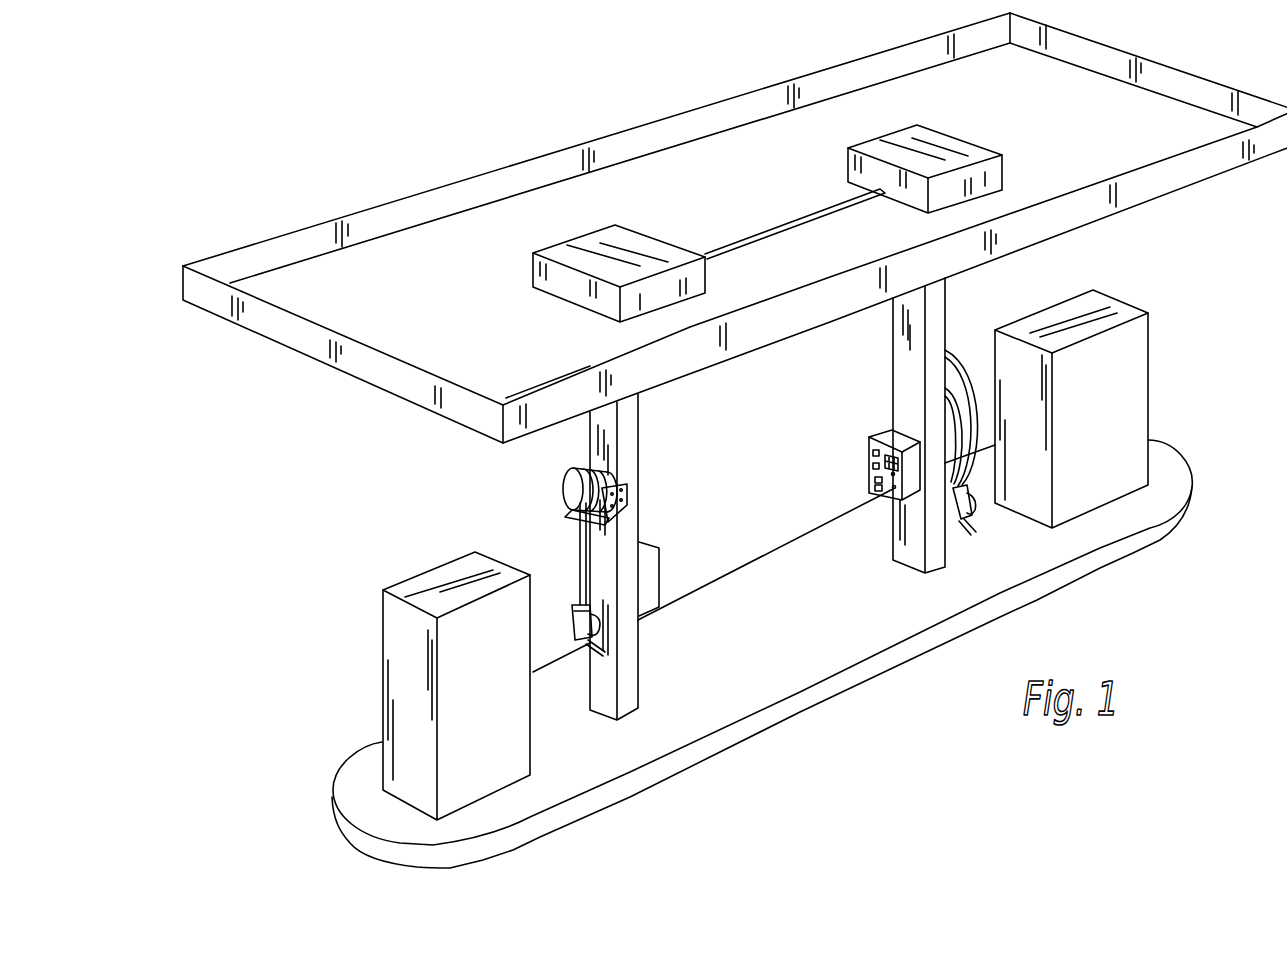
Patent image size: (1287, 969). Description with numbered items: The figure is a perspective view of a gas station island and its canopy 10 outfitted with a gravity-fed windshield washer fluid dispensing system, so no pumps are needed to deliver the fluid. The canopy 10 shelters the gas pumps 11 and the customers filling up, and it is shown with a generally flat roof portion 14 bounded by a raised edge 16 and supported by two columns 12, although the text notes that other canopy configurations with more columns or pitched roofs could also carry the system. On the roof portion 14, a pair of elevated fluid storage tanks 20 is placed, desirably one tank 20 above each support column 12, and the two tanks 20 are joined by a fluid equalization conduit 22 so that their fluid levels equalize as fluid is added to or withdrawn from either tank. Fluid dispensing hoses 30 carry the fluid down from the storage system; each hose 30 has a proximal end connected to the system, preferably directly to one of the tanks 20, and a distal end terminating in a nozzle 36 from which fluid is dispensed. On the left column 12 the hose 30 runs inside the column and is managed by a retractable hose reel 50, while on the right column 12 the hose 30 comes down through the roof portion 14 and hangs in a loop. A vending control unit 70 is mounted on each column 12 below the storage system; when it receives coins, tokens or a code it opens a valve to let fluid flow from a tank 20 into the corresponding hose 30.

The canopy 10 is at (385, 441).
The gas pumps 11 is at (383, 645).
The support columns 12 is at (636, 432).
The roof portion 14 is at (1142, 140).
The canopy 16 is at (1155, 186).
The fluid storage tanks 20 is at (533, 262).
The fluid equalization conduit 22 is at (792, 225).
The fluid dispensing hoses 30 is at (578, 553).
The nozzle 36 is at (572, 620).
The hose reel 50 is at (566, 512).
The vending control unit 70 is at (660, 560).